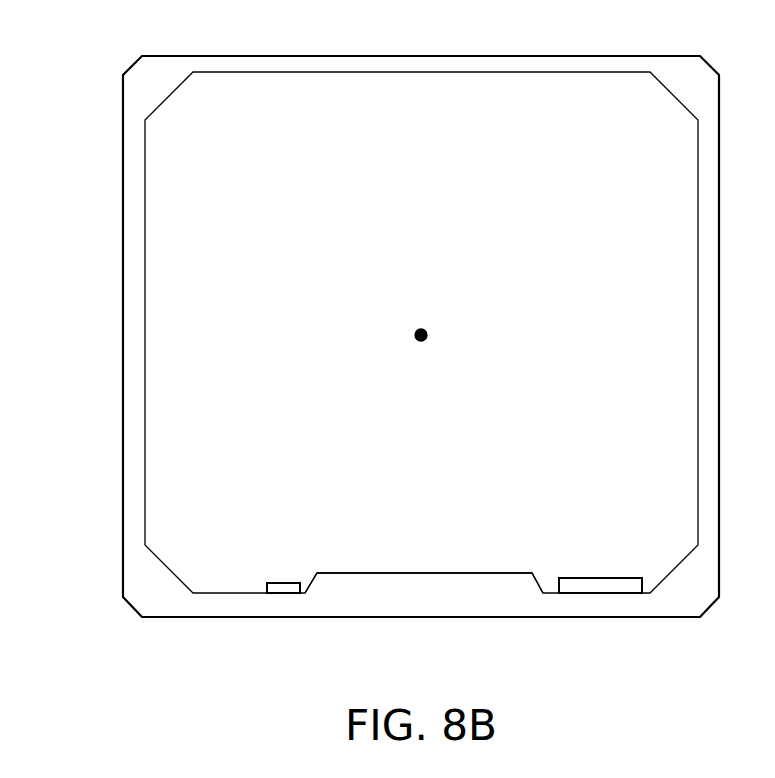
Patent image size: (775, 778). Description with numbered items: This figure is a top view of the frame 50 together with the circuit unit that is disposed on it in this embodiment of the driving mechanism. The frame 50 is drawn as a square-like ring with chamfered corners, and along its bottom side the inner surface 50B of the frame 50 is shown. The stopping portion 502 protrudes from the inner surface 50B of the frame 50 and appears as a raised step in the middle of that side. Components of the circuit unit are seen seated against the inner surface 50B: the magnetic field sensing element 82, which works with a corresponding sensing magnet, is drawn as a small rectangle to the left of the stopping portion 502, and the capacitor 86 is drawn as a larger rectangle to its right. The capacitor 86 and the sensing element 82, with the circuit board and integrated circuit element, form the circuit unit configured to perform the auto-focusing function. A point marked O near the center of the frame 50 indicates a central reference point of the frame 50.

The frame 50 is at (118, 517).
The inner surface 50B is at (204, 593).
The stopping portion 502 is at (426, 582).
The magnetic field sensing element 82 is at (283, 588).
The capacitor 86 is at (598, 583).
The optical center O is at (427, 337).